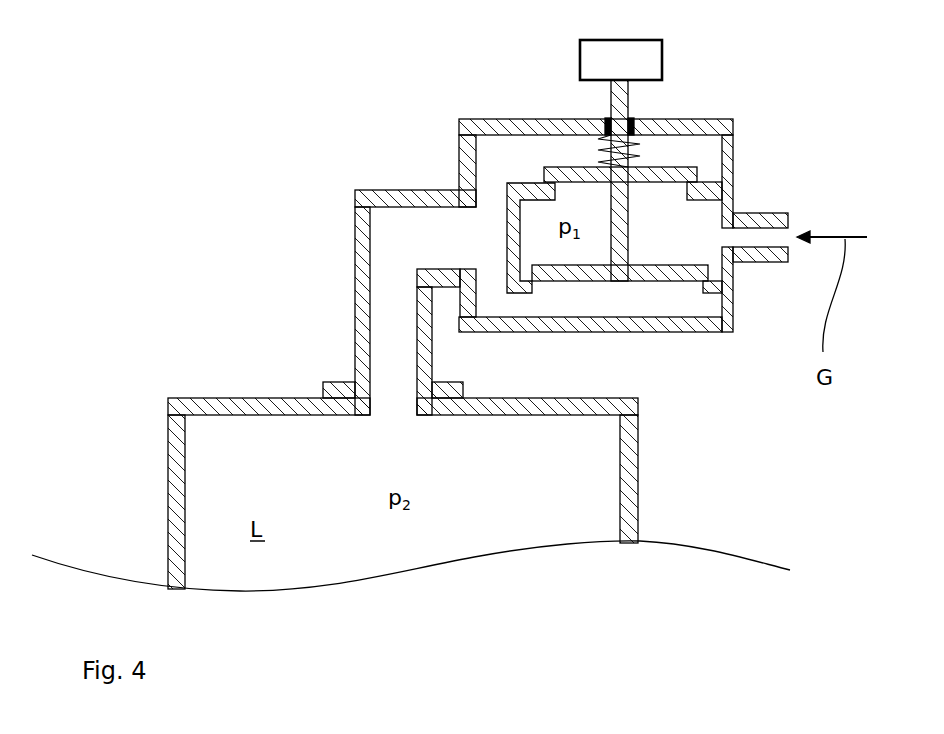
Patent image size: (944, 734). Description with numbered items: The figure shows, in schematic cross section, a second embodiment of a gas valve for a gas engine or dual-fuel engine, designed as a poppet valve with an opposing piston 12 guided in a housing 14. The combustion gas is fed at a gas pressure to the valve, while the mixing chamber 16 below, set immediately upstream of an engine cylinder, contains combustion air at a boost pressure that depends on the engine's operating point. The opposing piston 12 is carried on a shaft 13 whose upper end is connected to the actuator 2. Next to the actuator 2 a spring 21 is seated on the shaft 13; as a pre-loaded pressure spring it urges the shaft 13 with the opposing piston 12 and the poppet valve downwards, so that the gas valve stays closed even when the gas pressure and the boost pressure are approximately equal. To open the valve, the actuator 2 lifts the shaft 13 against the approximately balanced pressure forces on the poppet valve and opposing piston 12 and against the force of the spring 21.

The actuator 2 is at (622, 63).
The opposing piston 12 is at (662, 167).
The shaft 13 is at (622, 233).
The housing 14 is at (510, 236).
The mixing chamber 16 is at (623, 467).
The spring 21 is at (607, 153).